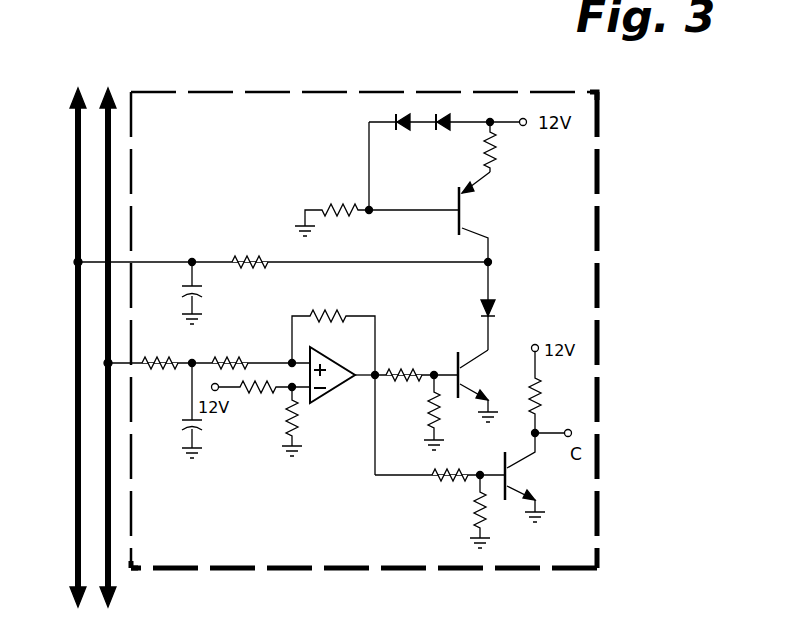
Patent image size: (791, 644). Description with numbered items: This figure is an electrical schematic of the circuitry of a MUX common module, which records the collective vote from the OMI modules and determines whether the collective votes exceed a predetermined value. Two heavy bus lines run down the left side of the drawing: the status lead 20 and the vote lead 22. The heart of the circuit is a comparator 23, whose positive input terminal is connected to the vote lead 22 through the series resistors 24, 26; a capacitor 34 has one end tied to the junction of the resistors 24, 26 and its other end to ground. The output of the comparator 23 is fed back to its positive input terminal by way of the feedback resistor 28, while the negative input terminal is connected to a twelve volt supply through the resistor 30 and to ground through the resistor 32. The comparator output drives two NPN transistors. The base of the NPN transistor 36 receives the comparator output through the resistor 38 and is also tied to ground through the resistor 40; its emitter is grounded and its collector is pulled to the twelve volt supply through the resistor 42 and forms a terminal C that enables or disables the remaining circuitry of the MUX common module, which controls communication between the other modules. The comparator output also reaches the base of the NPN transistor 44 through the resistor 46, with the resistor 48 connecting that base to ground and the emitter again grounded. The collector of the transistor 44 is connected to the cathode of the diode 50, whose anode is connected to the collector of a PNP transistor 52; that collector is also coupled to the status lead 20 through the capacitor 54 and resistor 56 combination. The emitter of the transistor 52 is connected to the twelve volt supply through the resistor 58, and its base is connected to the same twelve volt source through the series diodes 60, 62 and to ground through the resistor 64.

The status lead 20 is at (79, 88).
The vote lead 22 is at (109, 91).
The comparator 23 is at (330, 395).
The series resistor 24 is at (160, 359).
The series resistor 26 is at (232, 359).
The feedback resistor 28 is at (328, 312).
The resistor 30 is at (258, 398).
The resistor 32 is at (298, 436).
The capacitor 34 is at (178, 430).
The NPN transistor 36 is at (528, 476).
The resistor 38 is at (440, 485).
The resistor 40 is at (476, 522).
The resistor 42 is at (541, 409).
The NPN transistor 44 is at (482, 377).
The resistor 46 is at (404, 372).
The resistor 48 is at (428, 413).
The diode 50 is at (496, 302).
The PNP transistor 52 is at (484, 209).
The capacitor 54 is at (203, 293).
The resistor 56 is at (250, 259).
The resistor 58 is at (495, 157).
The series diode 60 is at (444, 131).
The series diode 62 is at (404, 131).
The resistor 64 is at (337, 205).